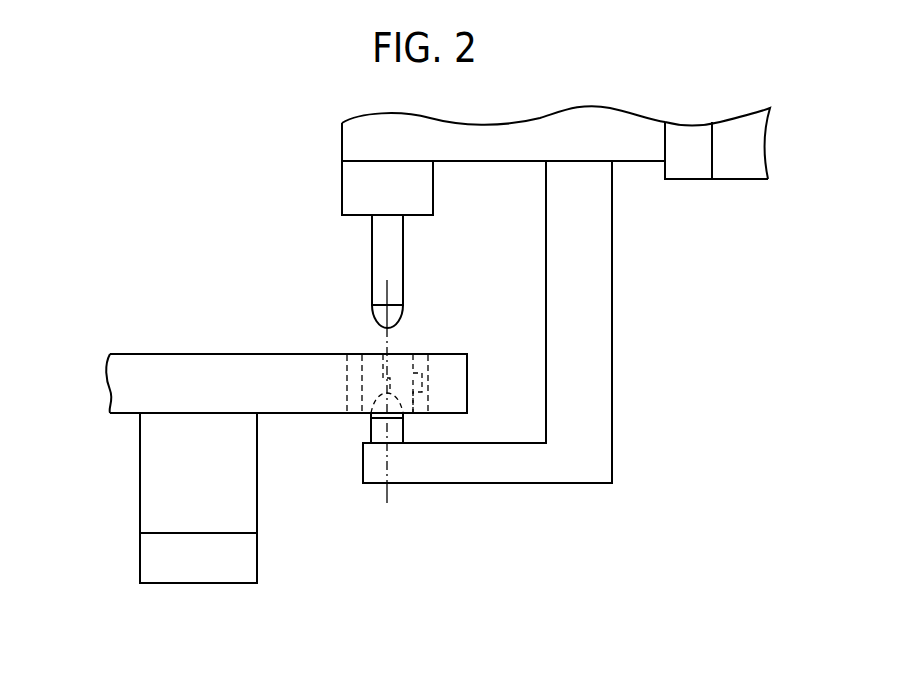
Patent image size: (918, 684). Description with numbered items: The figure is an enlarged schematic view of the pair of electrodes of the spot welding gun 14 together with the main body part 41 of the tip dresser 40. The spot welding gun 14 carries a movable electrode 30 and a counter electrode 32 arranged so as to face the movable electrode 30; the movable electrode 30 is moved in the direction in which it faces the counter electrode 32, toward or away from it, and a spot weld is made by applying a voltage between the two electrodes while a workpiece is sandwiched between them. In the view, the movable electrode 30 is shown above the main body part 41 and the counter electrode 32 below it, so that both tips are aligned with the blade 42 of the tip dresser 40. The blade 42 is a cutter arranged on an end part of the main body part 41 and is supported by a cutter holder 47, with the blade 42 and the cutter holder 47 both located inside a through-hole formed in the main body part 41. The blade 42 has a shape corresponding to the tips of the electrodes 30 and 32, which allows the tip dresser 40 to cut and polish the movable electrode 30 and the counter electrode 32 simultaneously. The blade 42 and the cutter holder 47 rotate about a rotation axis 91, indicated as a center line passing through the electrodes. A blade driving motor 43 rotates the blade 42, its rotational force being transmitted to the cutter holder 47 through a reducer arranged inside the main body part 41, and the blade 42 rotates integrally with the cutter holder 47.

The spot welding gun 14 is at (612, 283).
The movable electrode 30 is at (372, 258).
The counter electrode 32 is at (370, 436).
The tip dresser 40 is at (207, 353).
The main body part 41 is at (124, 352).
The blade 42 is at (394, 372).
The blade driving motor 43 is at (140, 485).
The cutter holder 47 is at (430, 397).
The rotation axis 91 is at (389, 496).